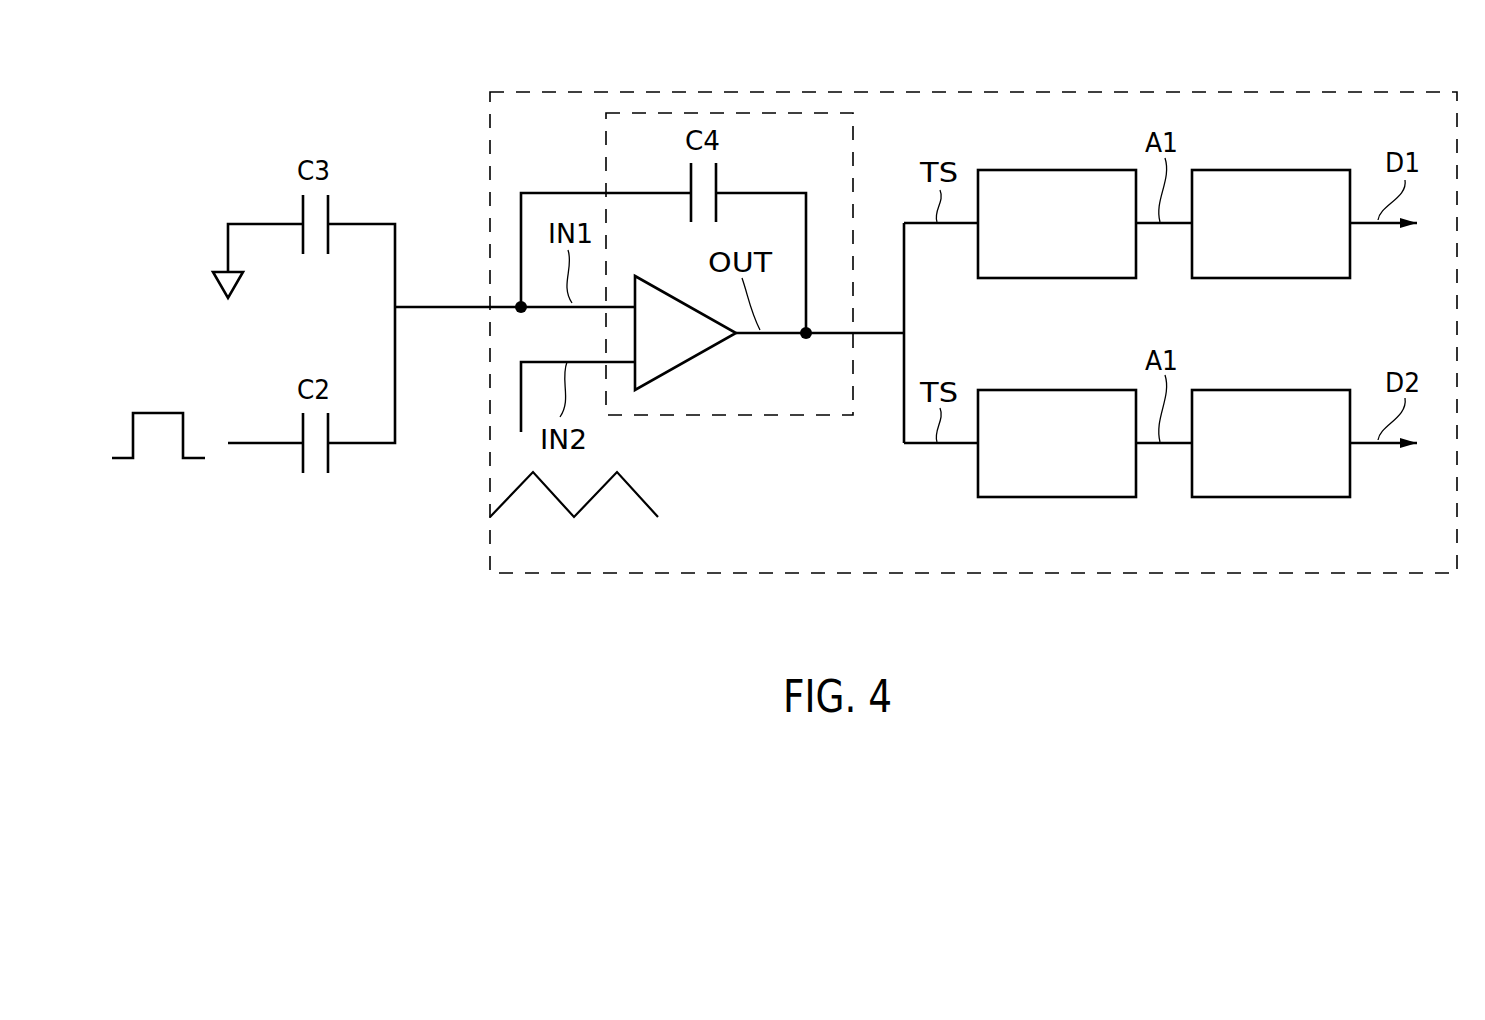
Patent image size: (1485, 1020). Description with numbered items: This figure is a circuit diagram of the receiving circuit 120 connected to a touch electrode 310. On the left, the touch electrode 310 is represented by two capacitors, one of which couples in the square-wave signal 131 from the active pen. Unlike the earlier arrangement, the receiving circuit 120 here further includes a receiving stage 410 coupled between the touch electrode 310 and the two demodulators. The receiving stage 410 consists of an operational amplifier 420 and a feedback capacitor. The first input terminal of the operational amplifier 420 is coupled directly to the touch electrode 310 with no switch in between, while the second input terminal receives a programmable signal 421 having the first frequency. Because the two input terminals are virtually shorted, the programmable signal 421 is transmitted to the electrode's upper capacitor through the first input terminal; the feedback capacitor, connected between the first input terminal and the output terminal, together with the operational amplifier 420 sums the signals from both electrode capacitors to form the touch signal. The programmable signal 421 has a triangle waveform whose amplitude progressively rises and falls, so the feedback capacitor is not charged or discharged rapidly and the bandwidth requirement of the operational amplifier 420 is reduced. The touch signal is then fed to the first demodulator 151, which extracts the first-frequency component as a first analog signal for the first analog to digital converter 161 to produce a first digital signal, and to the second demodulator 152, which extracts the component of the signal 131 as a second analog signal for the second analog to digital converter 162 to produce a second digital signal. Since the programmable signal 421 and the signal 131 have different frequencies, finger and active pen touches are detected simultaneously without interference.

The receiving circuit 120 is at (1093, 92).
The signal 131 is at (153, 413).
The first demodulator 151 is at (1080, 238).
The second demodulator 152 is at (1080, 458).
The first analog to digital converter 161 is at (1293, 238).
The second analog to digital converter 162 is at (1293, 458).
The touch electrode 310 is at (443, 305).
The receiving stage 410 is at (775, 415).
The operational amplifier 420 is at (693, 348).
The programmable signal 421 is at (587, 505).